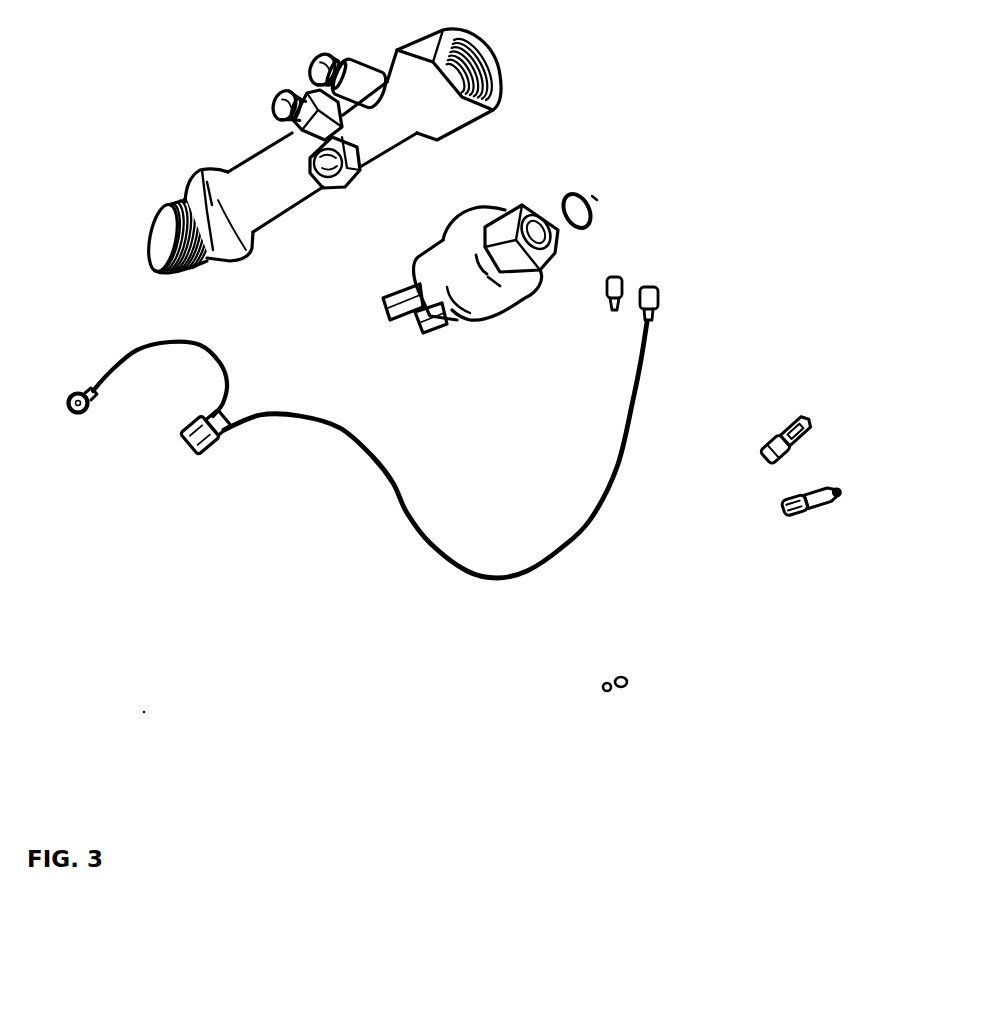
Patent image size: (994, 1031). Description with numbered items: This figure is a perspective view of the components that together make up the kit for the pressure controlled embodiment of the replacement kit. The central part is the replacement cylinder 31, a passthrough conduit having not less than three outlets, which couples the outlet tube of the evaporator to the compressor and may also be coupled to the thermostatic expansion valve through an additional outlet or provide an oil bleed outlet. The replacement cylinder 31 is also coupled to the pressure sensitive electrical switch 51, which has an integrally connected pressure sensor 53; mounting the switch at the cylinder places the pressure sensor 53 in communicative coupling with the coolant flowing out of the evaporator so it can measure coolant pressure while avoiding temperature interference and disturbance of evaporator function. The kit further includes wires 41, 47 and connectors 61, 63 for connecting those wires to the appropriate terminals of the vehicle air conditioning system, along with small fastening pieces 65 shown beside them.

The replacement cylinder 31 is at (228, 166).
The wire 41 is at (591, 518).
The wire 47 is at (110, 367).
The pressure sensitive electrical switch 51 is at (547, 187).
The pressure sensor 53 is at (476, 302).
The connector 61 is at (812, 422).
The connector 63 is at (840, 487).
The washers 65 is at (630, 680).